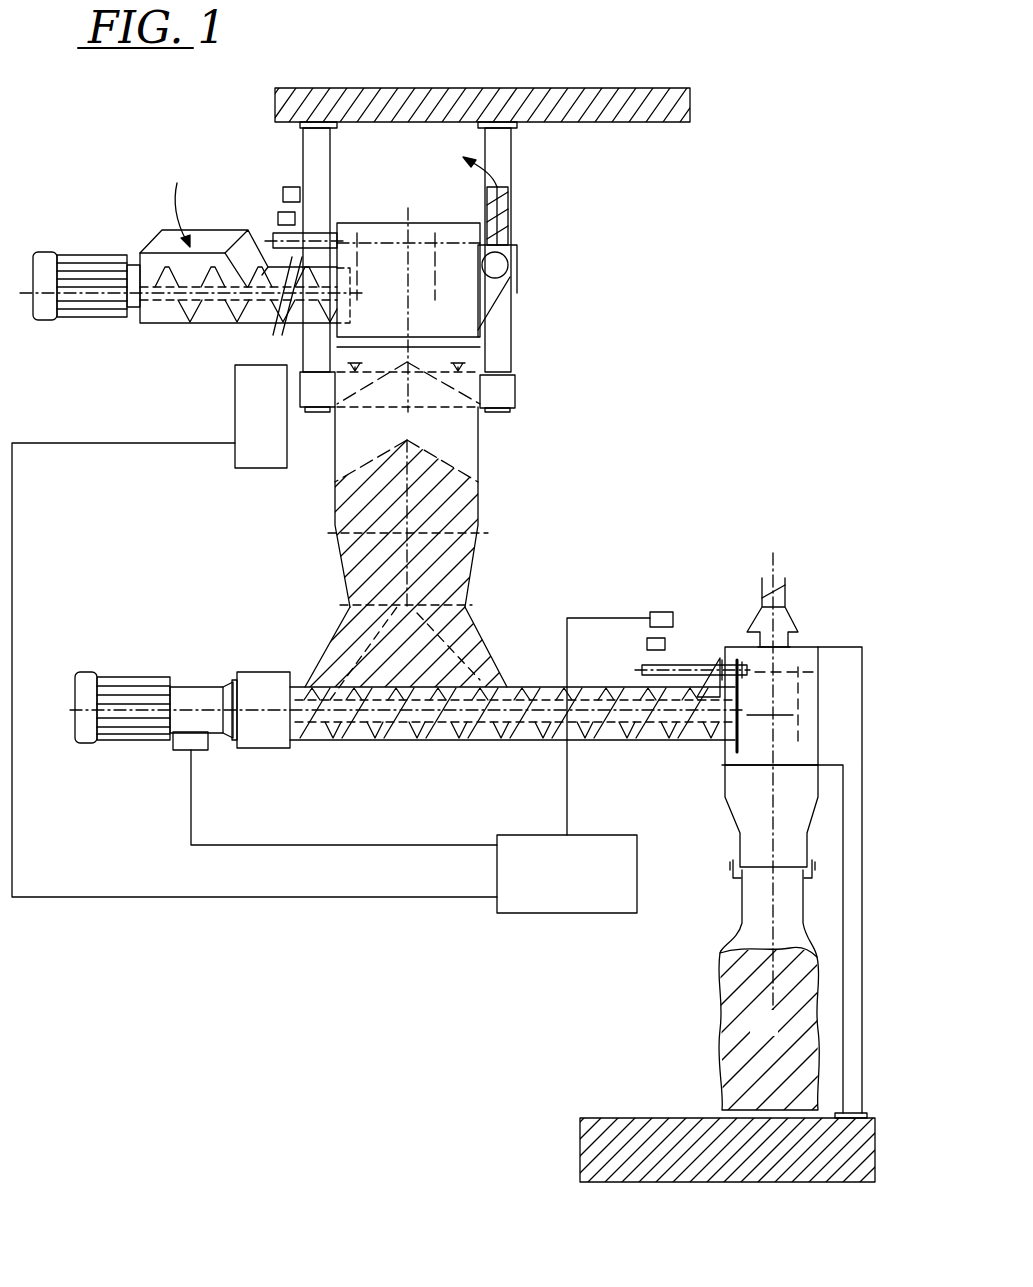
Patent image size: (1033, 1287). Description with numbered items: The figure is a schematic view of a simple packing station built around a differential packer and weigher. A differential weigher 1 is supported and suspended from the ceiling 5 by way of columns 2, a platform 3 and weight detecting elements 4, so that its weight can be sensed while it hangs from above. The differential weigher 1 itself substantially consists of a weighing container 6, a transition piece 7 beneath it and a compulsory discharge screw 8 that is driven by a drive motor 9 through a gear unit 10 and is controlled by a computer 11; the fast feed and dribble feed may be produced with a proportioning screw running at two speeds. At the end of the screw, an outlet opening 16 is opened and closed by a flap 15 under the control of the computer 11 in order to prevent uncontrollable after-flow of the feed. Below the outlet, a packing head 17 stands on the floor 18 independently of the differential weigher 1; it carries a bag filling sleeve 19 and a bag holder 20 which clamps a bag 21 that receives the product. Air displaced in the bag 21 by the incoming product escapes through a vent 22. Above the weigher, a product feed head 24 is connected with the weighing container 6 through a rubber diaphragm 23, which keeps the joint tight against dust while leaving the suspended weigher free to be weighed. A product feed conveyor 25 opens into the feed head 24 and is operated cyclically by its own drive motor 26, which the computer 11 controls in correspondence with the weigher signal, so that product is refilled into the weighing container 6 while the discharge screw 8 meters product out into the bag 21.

The differential weigher 1 is at (632, 382).
The columns 2 is at (507, 158).
The platform 3 is at (500, 393).
The weight detecting elements 4 is at (465, 367).
The ceiling 5 is at (630, 124).
The weighing container 6 is at (480, 525).
The transition piece 7 is at (480, 633).
The compulsory discharge screw 8 is at (532, 688).
The drive motor 9 is at (113, 680).
The gear unit 10 is at (257, 672).
The computer 11 is at (580, 906).
The flap 15 is at (800, 690).
The outlet opening 16 is at (715, 730).
The packing head 17 is at (795, 800).
The floor 18 is at (607, 1118).
The bag filling sleeve 19 is at (712, 868).
The bag holder 20 is at (809, 869).
The bag 21 is at (766, 990).
The vent 22 is at (785, 592).
The rubber diaphragm 23 is at (487, 345).
The product feed head 24 is at (457, 253).
The product feed conveyor 25 is at (208, 323).
The drive motor 26 is at (90, 318).